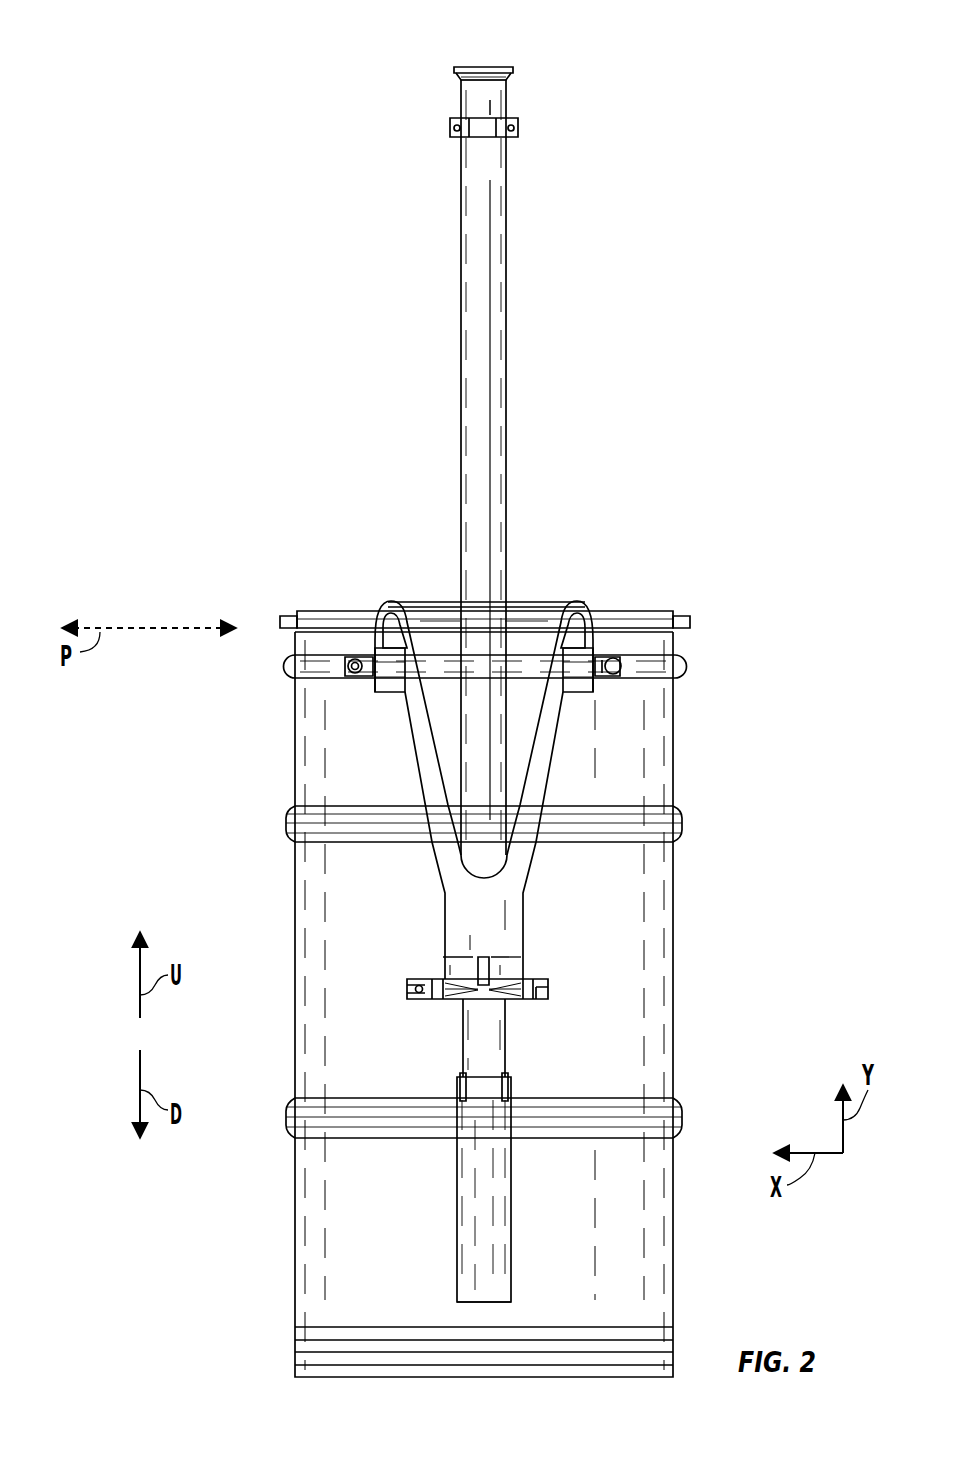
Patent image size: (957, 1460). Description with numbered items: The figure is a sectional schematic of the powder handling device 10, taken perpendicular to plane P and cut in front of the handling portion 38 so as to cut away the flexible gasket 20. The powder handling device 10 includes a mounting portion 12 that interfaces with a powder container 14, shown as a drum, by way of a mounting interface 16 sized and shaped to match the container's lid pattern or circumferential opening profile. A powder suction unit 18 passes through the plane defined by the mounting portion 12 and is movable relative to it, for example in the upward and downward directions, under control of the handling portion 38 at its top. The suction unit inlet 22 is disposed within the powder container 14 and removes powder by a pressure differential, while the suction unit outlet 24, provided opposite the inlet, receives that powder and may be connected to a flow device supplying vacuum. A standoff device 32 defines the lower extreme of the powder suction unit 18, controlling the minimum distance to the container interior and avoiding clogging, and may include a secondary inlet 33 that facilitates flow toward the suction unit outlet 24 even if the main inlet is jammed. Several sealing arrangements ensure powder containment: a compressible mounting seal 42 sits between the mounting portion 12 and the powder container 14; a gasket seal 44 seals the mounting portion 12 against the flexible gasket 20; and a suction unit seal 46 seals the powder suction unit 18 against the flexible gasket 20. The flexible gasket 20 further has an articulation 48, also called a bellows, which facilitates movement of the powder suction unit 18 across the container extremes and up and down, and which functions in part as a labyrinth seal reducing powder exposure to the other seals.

The powder handling device 10 is at (757, 262).
The mounting portion 12 is at (318, 608).
The powder container 14 is at (655, 876).
The mounting interface 16 is at (286, 614).
The powder suction unit 18 is at (483, 432).
The flexible gasket 20 is at (417, 762).
The suction unit inlet 22 is at (468, 1304).
The suction unit outlet 24 is at (468, 47).
The standoff device 32 is at (496, 1255).
The secondary inlet 33 is at (513, 1082).
The handling portion 38 is at (497, 231).
The mounting seal 42 is at (680, 616).
The gasket seal 44 is at (620, 668).
The suction unit seal 46 is at (518, 967).
The articulation 48 is at (578, 606).